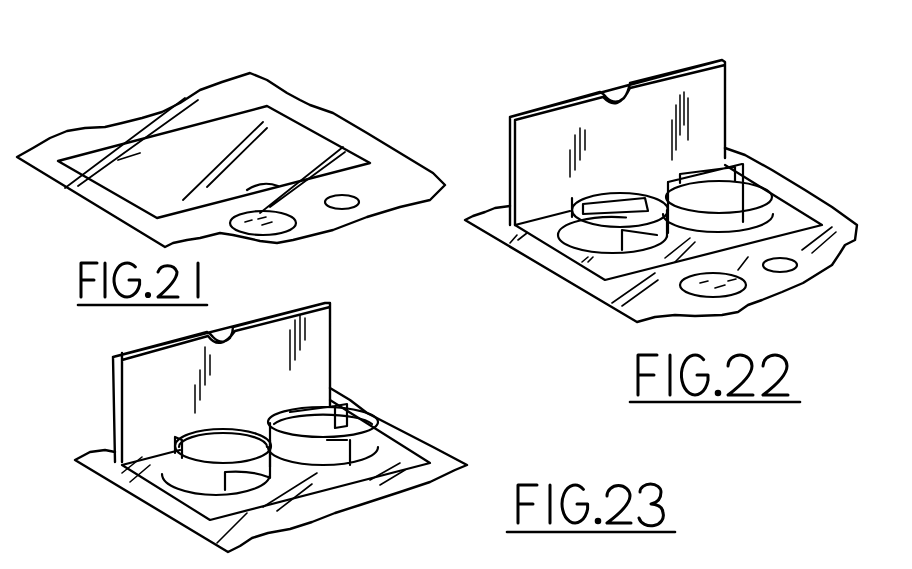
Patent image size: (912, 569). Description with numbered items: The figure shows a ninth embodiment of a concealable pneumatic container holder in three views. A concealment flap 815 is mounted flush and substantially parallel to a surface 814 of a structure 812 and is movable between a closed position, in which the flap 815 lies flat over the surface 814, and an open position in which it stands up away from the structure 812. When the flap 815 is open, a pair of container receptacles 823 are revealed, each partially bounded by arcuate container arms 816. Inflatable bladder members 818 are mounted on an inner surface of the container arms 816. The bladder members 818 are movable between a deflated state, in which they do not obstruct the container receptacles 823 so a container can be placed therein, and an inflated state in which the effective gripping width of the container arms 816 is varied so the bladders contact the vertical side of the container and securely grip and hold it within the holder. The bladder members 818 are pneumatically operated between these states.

In FIG. 21, the structure 812 is at (305, 107).
In FIG. 21, the surface 814 is at (220, 92).
In FIG. 21, the concealment flap 815 is at (130, 162).
In FIG. 22, the concealment flap 815 is at (563, 120).
In FIG. 23, the concealment flap 815 is at (323, 325).
In FIG. 22, the arcuate container arms 816 is at (728, 220).
In FIG. 23, the arcuate container arms 816 is at (323, 458).
In FIG. 22, the inflatable bladder members 818 is at (687, 178).
In FIG. 23, the inflatable bladder members 818 is at (320, 420).
In FIG. 22, the container receptacles 823 is at (757, 203).
In FIG. 23, the container receptacles 823 is at (363, 447).